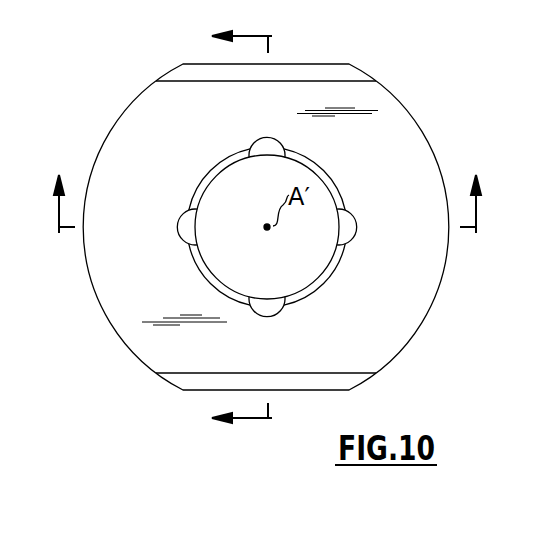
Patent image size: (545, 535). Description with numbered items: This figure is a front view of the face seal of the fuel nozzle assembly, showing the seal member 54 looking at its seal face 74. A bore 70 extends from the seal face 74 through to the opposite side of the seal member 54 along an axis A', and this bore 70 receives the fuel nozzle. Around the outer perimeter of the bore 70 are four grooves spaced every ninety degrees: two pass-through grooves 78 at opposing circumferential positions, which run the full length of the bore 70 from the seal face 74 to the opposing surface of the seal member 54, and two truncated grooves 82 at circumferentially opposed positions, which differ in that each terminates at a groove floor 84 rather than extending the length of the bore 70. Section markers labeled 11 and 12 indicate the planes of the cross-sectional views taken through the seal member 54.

The seal member 54 is at (385, 118).
The seal face 74 is at (411, 195).
The bore 70 is at (288, 247).
The groove floor 84 is at (265, 147).
The pass-through grooves 78 is at (357, 245).
The truncated grooves 82 is at (265, 320).
The section line 11- 11 is at (270, 191).
The section line 12- 12 is at (258, 230).